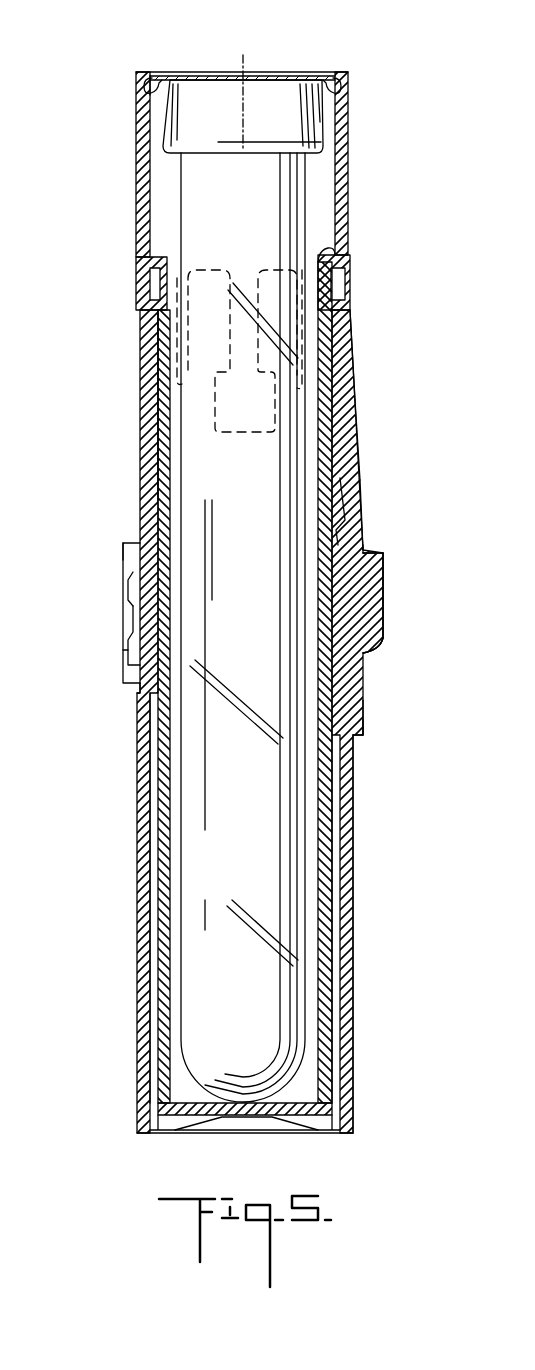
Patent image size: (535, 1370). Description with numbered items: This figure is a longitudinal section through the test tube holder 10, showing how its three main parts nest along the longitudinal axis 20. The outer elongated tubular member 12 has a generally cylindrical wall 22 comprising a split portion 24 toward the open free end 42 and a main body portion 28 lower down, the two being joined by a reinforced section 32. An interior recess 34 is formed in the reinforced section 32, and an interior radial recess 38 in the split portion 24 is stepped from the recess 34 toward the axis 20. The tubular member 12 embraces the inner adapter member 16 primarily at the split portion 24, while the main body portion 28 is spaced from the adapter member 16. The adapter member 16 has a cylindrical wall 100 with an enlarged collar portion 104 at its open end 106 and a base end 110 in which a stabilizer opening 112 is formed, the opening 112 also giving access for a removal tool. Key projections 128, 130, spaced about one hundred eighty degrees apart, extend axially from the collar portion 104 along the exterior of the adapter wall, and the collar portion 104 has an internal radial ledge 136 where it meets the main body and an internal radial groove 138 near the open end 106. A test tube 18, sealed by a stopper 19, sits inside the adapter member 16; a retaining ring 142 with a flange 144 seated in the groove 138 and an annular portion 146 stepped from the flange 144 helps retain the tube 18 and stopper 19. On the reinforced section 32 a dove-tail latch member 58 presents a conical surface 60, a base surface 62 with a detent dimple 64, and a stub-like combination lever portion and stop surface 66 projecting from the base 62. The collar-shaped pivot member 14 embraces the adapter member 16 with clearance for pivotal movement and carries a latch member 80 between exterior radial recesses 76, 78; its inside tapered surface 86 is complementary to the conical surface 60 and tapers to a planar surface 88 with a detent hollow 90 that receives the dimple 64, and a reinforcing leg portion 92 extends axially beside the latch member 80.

The test tube holder 10 is at (374, 146).
The tubular member 12 is at (139, 357).
The pivot member 14 is at (157, 498).
The adapter member 16 is at (328, 777).
The test tube 18 is at (250, 228).
The stopper 19 is at (176, 120).
The longitudinal axis 20 is at (244, 58).
The cylindrical wall 22 is at (346, 830).
The split portion 24 is at (352, 385).
The main body portion 28 is at (354, 932).
The reinforced section 32 is at (364, 710).
The interior recess 34 is at (358, 548).
The interior radial recess 38 is at (347, 492).
The open free end 42 is at (351, 325).
The dove-tail latch member 58 is at (385, 636).
The conical surface 60 is at (376, 648).
The base surface 62 is at (384, 580).
The detent dimple 64 is at (384, 606).
The combination lever portion and stop surface 66 is at (381, 556).
The exterior radial recess 76 is at (340, 525).
The exterior radial recess 78 is at (140, 700).
The latch member 80 is at (122, 552).
The inside tapered surface 86 is at (125, 632).
The planar surface 88 is at (128, 583).
The detent hollow 90 is at (129, 608).
The reinforcing leg portion 92 is at (126, 542).
The cylindrical wall 100 is at (333, 870).
The enlarged collar portion 104 is at (137, 182).
The open end 106 is at (336, 72).
The base end 110 is at (198, 1122).
The stabilizer opening 112 is at (246, 1125).
The key projection 128 is at (152, 285).
The key projection 130 is at (346, 280).
The internal radial ledge 136 is at (330, 250).
The internal radial groove 138 is at (145, 90).
The retaining ring 142 is at (286, 70).
The flange 144 is at (154, 70).
The cap flange 146 is at (192, 76).